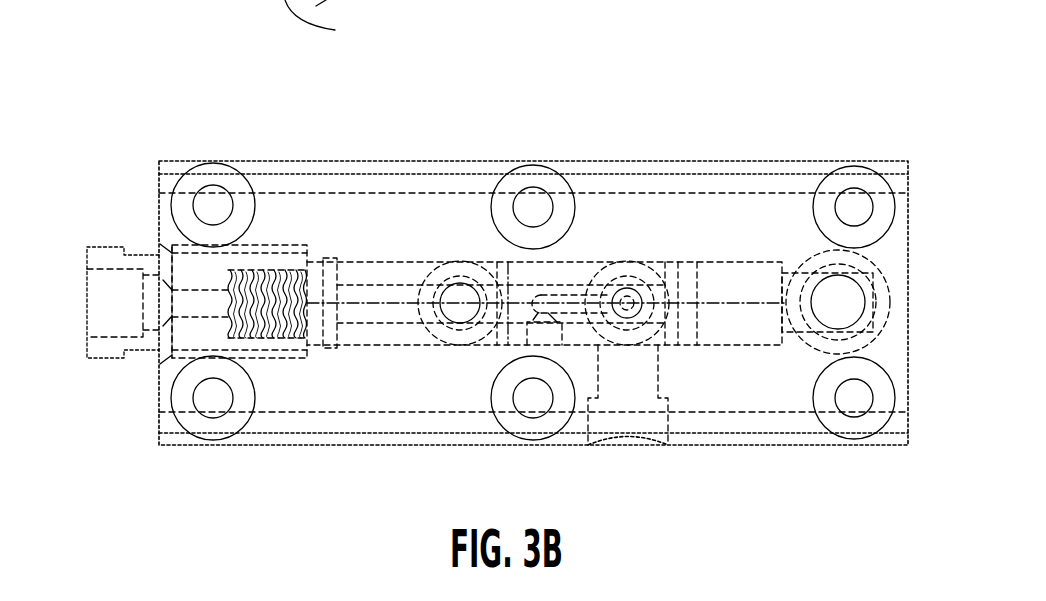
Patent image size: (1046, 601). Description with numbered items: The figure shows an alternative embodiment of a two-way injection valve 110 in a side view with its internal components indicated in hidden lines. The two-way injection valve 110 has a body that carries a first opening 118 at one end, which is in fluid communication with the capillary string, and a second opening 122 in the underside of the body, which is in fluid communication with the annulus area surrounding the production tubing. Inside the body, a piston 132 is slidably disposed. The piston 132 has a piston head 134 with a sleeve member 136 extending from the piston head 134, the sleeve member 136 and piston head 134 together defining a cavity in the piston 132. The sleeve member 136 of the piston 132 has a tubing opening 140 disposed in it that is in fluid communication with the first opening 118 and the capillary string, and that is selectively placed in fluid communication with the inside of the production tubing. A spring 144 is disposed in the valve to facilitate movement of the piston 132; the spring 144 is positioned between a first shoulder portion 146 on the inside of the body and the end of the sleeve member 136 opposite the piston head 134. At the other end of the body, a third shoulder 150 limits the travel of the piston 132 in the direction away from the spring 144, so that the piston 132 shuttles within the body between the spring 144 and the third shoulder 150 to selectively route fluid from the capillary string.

The two-way injection valve 110 is at (811, 93).
The first opening 118 is at (117, 268).
The second opening 122 is at (657, 370).
The piston 132 is at (580, 262).
The piston head 134 is at (700, 287).
The sleeve member 136 is at (388, 272).
The tubing opening 140 is at (527, 330).
The spring 144 is at (280, 272).
The first shoulder portion 146 is at (243, 272).
The third shoulder 150 is at (782, 268).